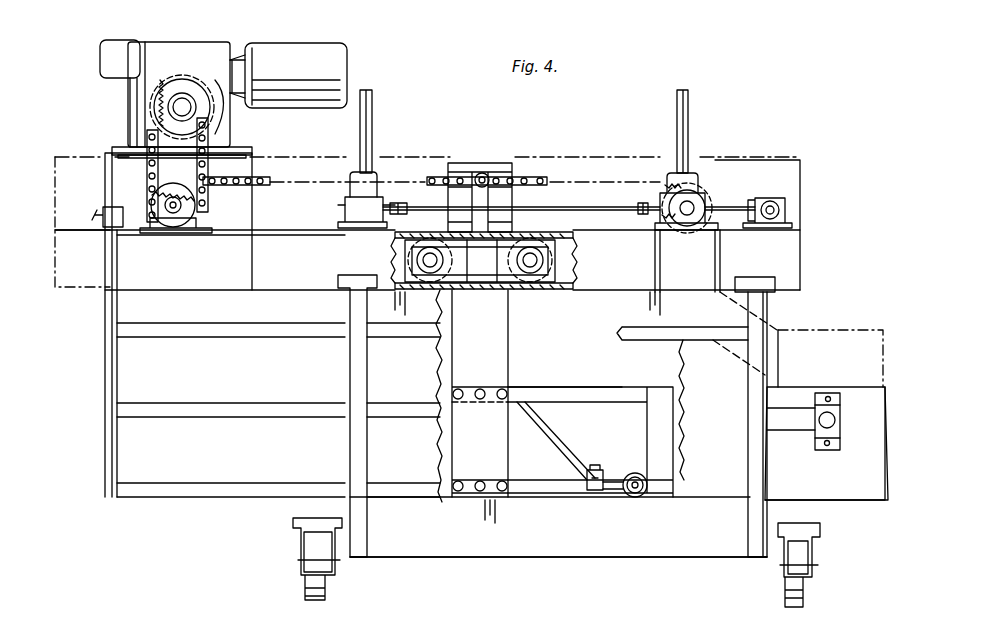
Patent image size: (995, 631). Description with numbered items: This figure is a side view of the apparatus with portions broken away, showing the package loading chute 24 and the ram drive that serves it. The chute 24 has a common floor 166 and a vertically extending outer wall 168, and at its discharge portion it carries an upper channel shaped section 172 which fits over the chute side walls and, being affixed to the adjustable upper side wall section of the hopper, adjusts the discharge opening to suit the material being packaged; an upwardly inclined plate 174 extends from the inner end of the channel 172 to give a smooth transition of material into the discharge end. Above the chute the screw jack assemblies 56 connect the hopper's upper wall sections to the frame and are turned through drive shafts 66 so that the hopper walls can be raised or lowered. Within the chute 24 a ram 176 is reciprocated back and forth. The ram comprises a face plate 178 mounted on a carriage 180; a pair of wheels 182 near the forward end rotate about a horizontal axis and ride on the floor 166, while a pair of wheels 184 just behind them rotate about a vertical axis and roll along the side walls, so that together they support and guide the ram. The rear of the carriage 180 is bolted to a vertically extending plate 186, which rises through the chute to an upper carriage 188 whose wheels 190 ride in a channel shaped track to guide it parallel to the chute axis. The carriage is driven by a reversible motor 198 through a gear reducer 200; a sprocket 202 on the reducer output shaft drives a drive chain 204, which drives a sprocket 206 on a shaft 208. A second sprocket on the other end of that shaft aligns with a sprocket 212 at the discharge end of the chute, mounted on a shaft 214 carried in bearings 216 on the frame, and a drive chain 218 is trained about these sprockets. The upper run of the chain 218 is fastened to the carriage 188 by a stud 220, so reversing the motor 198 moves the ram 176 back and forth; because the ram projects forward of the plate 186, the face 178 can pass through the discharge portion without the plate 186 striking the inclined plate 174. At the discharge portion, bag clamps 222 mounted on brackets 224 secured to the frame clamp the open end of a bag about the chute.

The package loading chute 24 is at (208, 519).
The screw jack assemblies 56 is at (368, 180).
The drive shafts 66 is at (568, 210).
The common floor 166 is at (650, 497).
The outer wall 168 is at (412, 388).
The upper channel shaped section 172 is at (840, 325).
The upwardly inclined plate 174 is at (775, 305).
The ram 176 is at (566, 372).
The face plate 178 is at (680, 383).
The carriage 180 is at (585, 392).
The wheels 182 is at (635, 472).
The wheels 184 is at (595, 470).
The vertically extending plate 186 is at (497, 365).
The carriage 188 is at (488, 158).
The wheels 190 is at (410, 263).
The reversible motor 198 is at (287, 52).
The gear reducer 200 is at (184, 50).
The sprocket 202 is at (150, 107).
The drive chain 204 is at (148, 147).
The sprocket 206 is at (187, 187).
The shaft 208 is at (187, 207).
The sprocket 212 is at (695, 203).
The shaft 214 is at (692, 206).
The bearings 216 is at (715, 235).
The drive chain 218 is at (530, 175).
The stud 220 is at (488, 176).
The bag clamps 222 is at (827, 459).
The brackets 224 is at (777, 420).